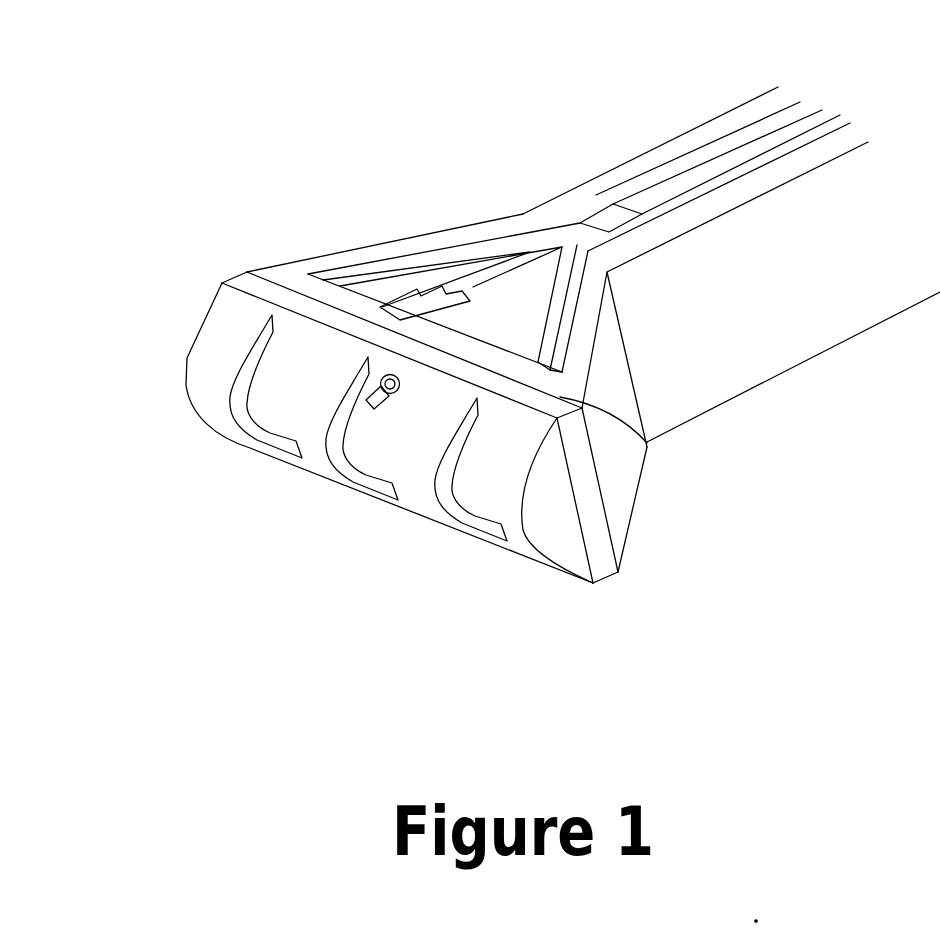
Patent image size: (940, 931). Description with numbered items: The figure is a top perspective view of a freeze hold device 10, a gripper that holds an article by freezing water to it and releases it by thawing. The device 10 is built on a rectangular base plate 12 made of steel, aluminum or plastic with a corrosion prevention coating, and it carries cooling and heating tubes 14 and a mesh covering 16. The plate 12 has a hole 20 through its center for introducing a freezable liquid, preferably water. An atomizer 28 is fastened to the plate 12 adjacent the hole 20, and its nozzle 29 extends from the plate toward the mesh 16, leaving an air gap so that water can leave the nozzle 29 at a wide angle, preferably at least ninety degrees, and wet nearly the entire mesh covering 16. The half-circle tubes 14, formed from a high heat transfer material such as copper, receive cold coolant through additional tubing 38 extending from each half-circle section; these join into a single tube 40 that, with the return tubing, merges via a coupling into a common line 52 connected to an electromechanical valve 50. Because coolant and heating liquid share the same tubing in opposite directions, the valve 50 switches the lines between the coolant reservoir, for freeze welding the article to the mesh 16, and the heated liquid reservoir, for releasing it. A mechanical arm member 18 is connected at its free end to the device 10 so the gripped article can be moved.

The freeze hold device 10 is at (263, 247).
The base plate 12 is at (647, 447).
The cooling and heating tubes 14 is at (455, 503).
The mesh covering 16 is at (553, 523).
The mechanical arm member 18 is at (884, 277).
The hole 20 is at (505, 356).
The atomizer 28 is at (458, 315).
The nozzle 29 is at (372, 397).
The additional tubing 38 is at (562, 287).
The single tube 40 is at (550, 243).
The electromechanical valve 50 is at (613, 212).
The common line 52 is at (581, 226).